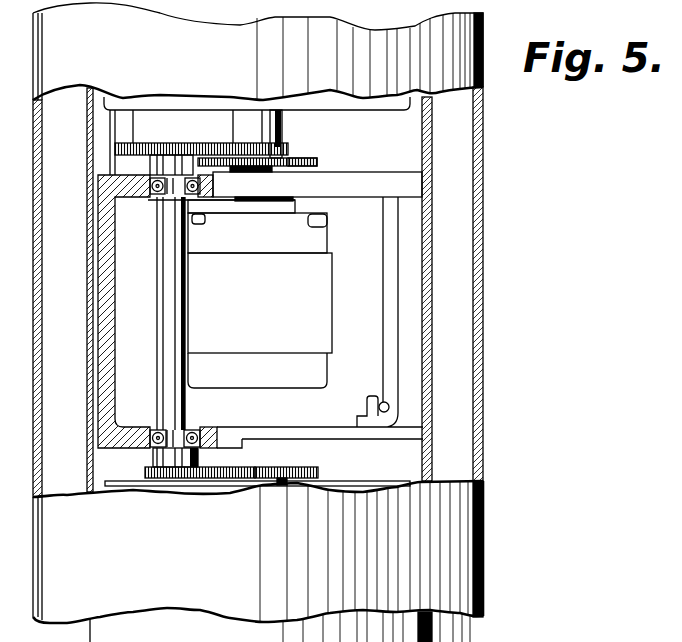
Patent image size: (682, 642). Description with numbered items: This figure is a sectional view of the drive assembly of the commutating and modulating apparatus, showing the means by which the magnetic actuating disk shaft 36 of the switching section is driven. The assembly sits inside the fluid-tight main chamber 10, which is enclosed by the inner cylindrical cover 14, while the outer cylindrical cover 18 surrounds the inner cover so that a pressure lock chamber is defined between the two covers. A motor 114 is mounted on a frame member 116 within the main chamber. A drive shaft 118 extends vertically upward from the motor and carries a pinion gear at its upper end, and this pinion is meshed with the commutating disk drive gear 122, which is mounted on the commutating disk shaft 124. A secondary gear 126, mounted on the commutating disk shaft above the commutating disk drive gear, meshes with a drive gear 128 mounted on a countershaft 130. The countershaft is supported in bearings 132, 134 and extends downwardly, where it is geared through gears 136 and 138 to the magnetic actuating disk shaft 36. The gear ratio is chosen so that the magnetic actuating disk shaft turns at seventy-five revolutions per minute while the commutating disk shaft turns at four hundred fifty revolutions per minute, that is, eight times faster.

The main chamber 10 is at (358, 323).
The inner cylindrical cover 14 is at (432, 193).
The outer cylindrical cover 18 is at (483, 235).
The magnetic actuating disk shaft 36 is at (285, 481).
The motor 114 is at (312, 305).
The frame member 116 is at (362, 180).
The drive shaft 118 is at (300, 203).
The commutating disk drive gear 122 is at (318, 162).
The commutating disk shaft 124 is at (280, 121).
The secondary gear 126 is at (283, 157).
The drive gear 128 is at (170, 143).
The countershaft 130 is at (171, 268).
The bearing 132 is at (152, 200).
The bearing 134 is at (150, 447).
The gear 136 is at (200, 467).
The gear 138 is at (270, 466).